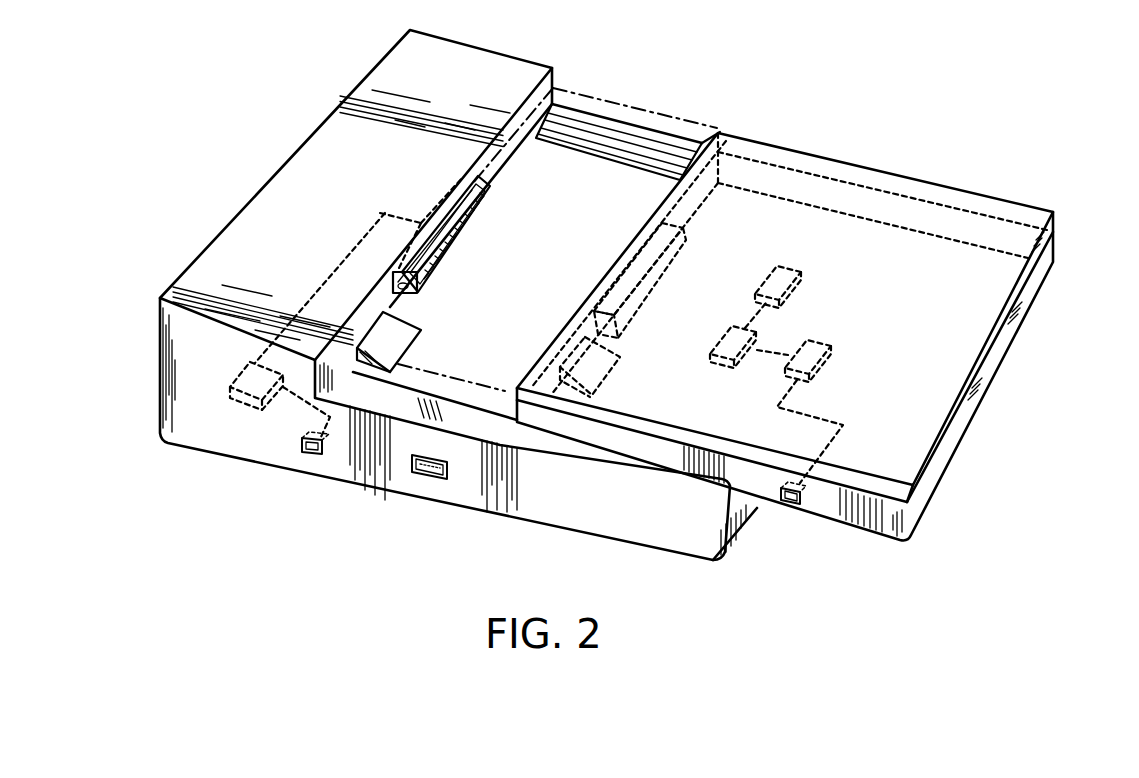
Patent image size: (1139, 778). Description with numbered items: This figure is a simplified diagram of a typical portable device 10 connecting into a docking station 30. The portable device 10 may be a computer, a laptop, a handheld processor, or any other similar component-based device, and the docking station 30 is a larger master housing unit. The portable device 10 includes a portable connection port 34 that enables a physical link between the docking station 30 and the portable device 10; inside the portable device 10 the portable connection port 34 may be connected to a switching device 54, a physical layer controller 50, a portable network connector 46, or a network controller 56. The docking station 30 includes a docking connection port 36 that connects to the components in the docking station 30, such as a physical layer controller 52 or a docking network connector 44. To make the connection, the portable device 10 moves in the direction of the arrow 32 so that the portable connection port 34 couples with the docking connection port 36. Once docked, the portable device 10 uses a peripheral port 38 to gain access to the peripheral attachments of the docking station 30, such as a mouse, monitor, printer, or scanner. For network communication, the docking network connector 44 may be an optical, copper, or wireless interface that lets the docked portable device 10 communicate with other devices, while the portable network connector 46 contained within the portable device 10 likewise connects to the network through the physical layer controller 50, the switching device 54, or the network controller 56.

The portable device 10 is at (888, 168).
The docking station 30 is at (487, 53).
The arrow 32 is at (1010, 401).
The portable connection port 34 is at (688, 246).
The docking connection port 36 is at (453, 203).
The peripheral port 38 is at (432, 478).
The docking network connector 44 is at (312, 455).
The portable network connector 46 is at (790, 505).
The physical layer controller 50 is at (826, 345).
The physical layer controller 52 is at (248, 408).
The switching device 54 is at (717, 346).
The network controller 56 is at (793, 266).